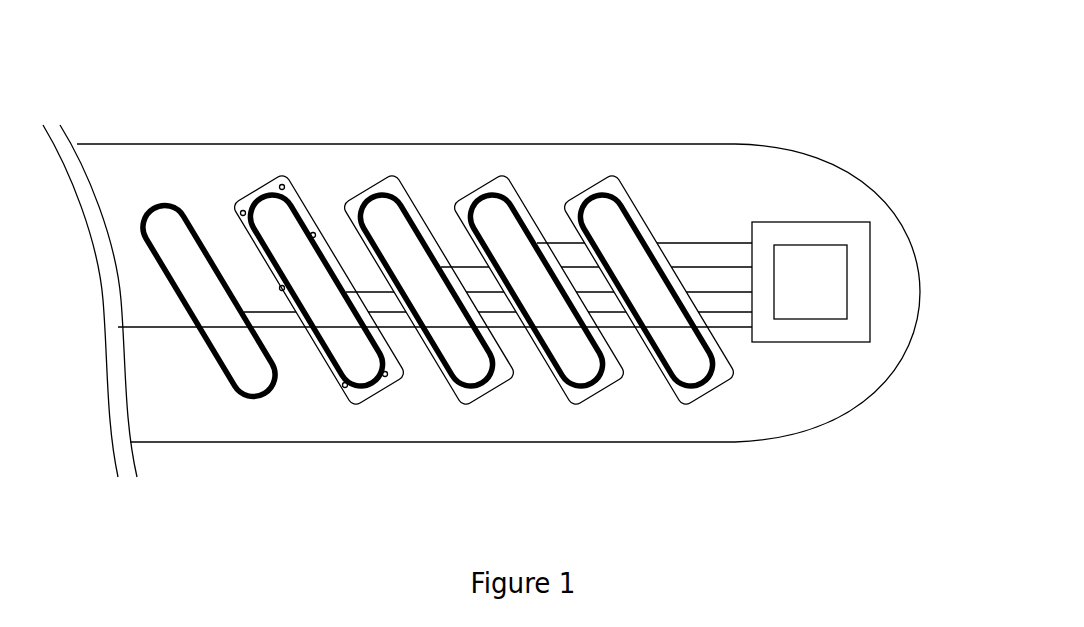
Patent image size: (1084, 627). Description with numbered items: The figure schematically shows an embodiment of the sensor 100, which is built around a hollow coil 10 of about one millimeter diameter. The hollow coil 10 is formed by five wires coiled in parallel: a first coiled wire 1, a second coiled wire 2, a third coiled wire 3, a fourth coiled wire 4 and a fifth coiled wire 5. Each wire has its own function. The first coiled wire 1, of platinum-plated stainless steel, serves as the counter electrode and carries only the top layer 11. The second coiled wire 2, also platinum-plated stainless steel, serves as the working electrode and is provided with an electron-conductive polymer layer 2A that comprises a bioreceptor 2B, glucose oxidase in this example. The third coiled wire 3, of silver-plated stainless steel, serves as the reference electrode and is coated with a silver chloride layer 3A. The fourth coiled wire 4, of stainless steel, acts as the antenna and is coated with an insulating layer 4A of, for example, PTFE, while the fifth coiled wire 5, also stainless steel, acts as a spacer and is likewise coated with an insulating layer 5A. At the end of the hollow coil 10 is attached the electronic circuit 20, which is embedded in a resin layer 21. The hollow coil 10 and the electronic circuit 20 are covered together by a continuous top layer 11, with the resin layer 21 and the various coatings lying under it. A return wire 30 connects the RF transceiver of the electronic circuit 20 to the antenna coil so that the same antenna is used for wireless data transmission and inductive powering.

The sensor 100 is at (501, 258).
The top layer 11 is at (660, 168).
The hollow coil 10 is at (362, 253).
The return wire 30 is at (165, 328).
The first coiled wire 1 is at (263, 398).
The second coiled wire 2 is at (383, 403).
The polymer layer 2A is at (258, 187).
The bioreceptor 2B is at (343, 385).
The third coiled wire 3 is at (492, 405).
The silver chloride layer 3A is at (385, 187).
The fourth coiled wire 4 is at (598, 405).
The insulating layer 4A is at (478, 188).
The fifth coiled wire 5 is at (703, 400).
The insulating layer 5A is at (588, 178).
The electronic circuit 20 is at (837, 298).
The resin layer 21 is at (802, 328).